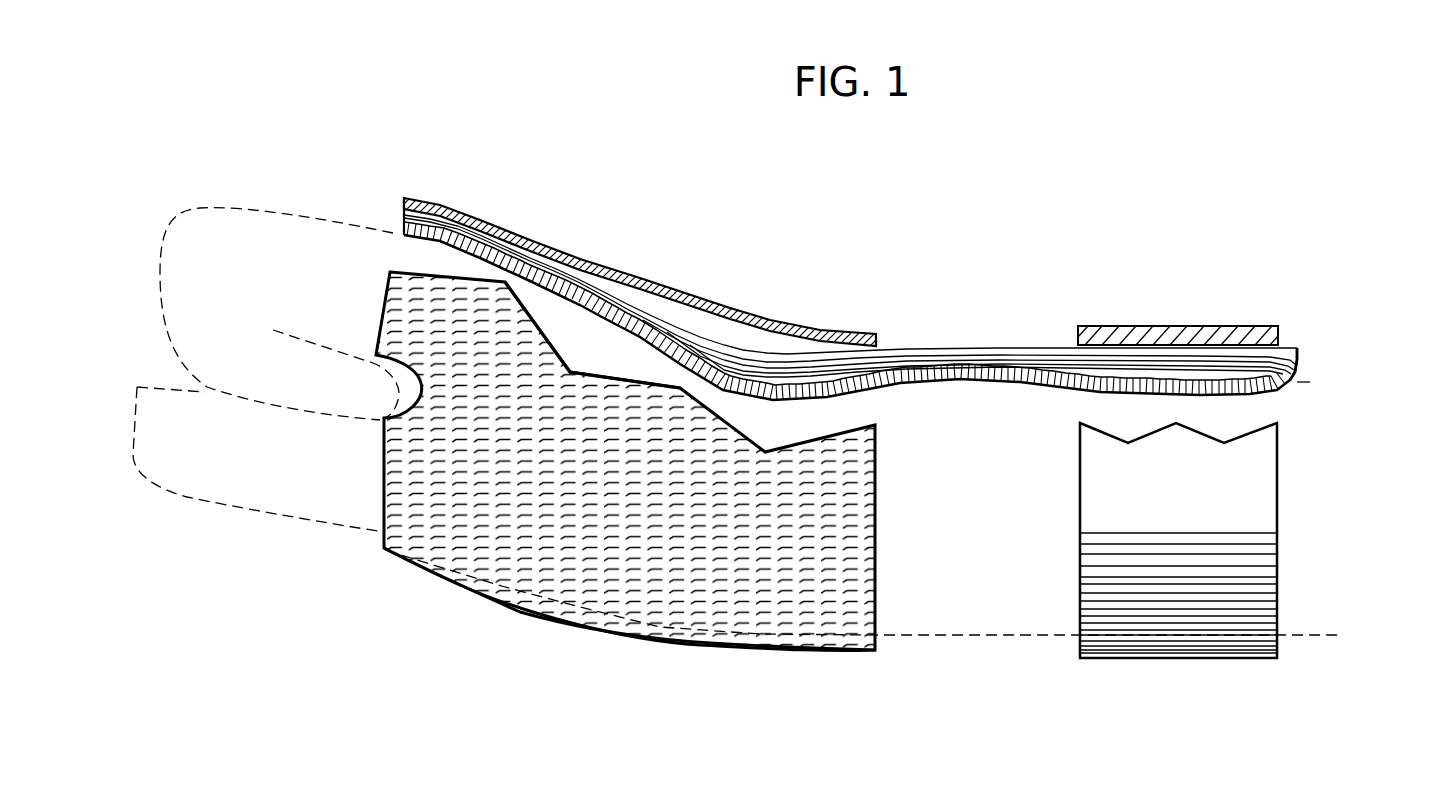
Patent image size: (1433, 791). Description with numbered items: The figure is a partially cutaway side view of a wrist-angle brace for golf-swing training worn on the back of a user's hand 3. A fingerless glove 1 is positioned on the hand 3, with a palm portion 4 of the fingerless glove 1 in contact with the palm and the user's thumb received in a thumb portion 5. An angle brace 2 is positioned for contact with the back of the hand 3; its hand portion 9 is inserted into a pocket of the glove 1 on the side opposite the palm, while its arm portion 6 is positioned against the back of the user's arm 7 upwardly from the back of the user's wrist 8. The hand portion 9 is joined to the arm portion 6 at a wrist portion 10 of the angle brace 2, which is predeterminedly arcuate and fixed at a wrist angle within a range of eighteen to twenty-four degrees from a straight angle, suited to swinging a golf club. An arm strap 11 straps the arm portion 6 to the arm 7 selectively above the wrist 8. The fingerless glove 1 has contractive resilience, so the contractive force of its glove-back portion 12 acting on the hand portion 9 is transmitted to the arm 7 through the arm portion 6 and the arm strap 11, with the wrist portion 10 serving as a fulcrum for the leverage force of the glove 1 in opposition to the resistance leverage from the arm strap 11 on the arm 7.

The fingerless glove 1 is at (904, 706).
The angle brace 2 is at (1332, 362).
The hand 3 is at (578, 340).
The palm portion 4 is at (490, 588).
The thumb portion 5 is at (402, 495).
The arm portion 6 is at (1165, 360).
The arm 7 is at (1313, 382).
The wrist 8 is at (897, 410).
The hand portion 9 is at (485, 232).
The wrist portion 10 is at (792, 360).
The arm strap 11 is at (1157, 511).
The glove-back portion 12 is at (585, 262).